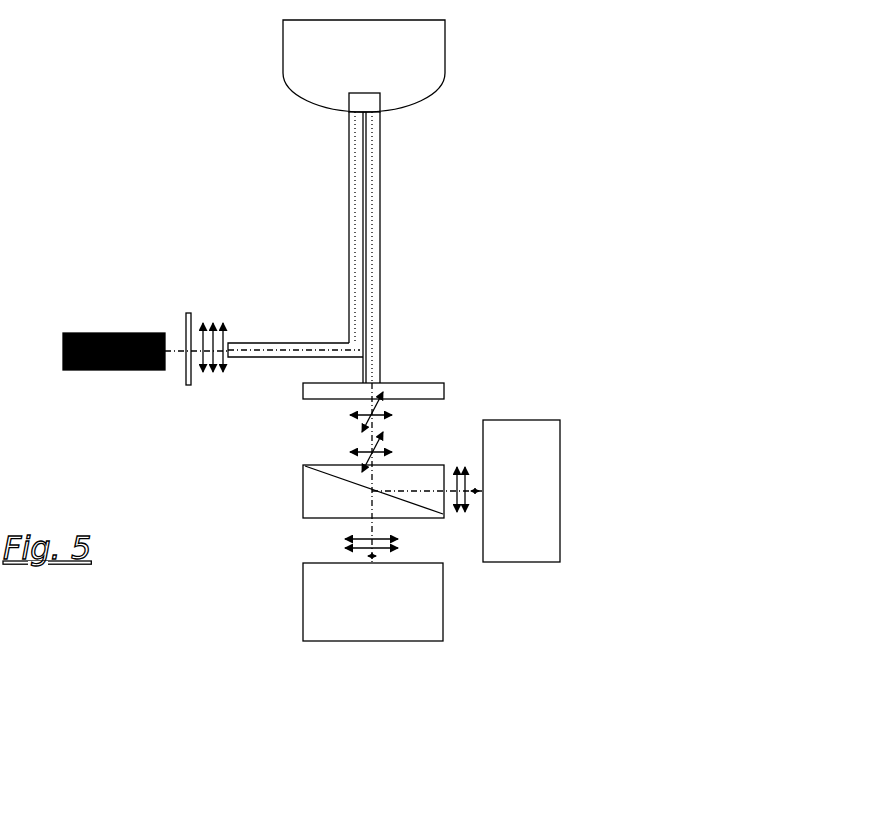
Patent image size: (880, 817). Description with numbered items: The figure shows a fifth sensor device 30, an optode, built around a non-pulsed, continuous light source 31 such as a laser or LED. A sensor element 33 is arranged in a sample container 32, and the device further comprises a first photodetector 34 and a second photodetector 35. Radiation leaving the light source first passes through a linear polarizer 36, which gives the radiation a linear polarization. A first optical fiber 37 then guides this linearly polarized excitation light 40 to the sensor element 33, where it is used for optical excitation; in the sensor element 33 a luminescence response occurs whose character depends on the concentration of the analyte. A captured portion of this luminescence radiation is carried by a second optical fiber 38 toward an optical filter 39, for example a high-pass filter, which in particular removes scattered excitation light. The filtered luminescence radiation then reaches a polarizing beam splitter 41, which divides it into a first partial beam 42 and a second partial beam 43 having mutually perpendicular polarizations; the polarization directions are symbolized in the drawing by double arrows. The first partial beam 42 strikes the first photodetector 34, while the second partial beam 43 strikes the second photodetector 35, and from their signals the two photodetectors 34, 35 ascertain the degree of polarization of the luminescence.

The sensor device 30 is at (478, 115).
The light source 31 is at (92, 333).
The sample container 32 is at (300, 83).
The sensor element 33 is at (370, 103).
The first photodetector 34 is at (413, 633).
The second photodetector 35 is at (548, 489).
The linear polarizer 36 is at (195, 318).
The first optical fiber 37 is at (350, 170).
The second optical fiber 38 is at (372, 213).
The optical filter 39 is at (388, 383).
The linearly polarized excitation light 40 is at (345, 448).
The polarizing beam splitter 41 is at (313, 480).
The first partial beam 42 is at (340, 541).
The second partial beam 43 is at (458, 450).